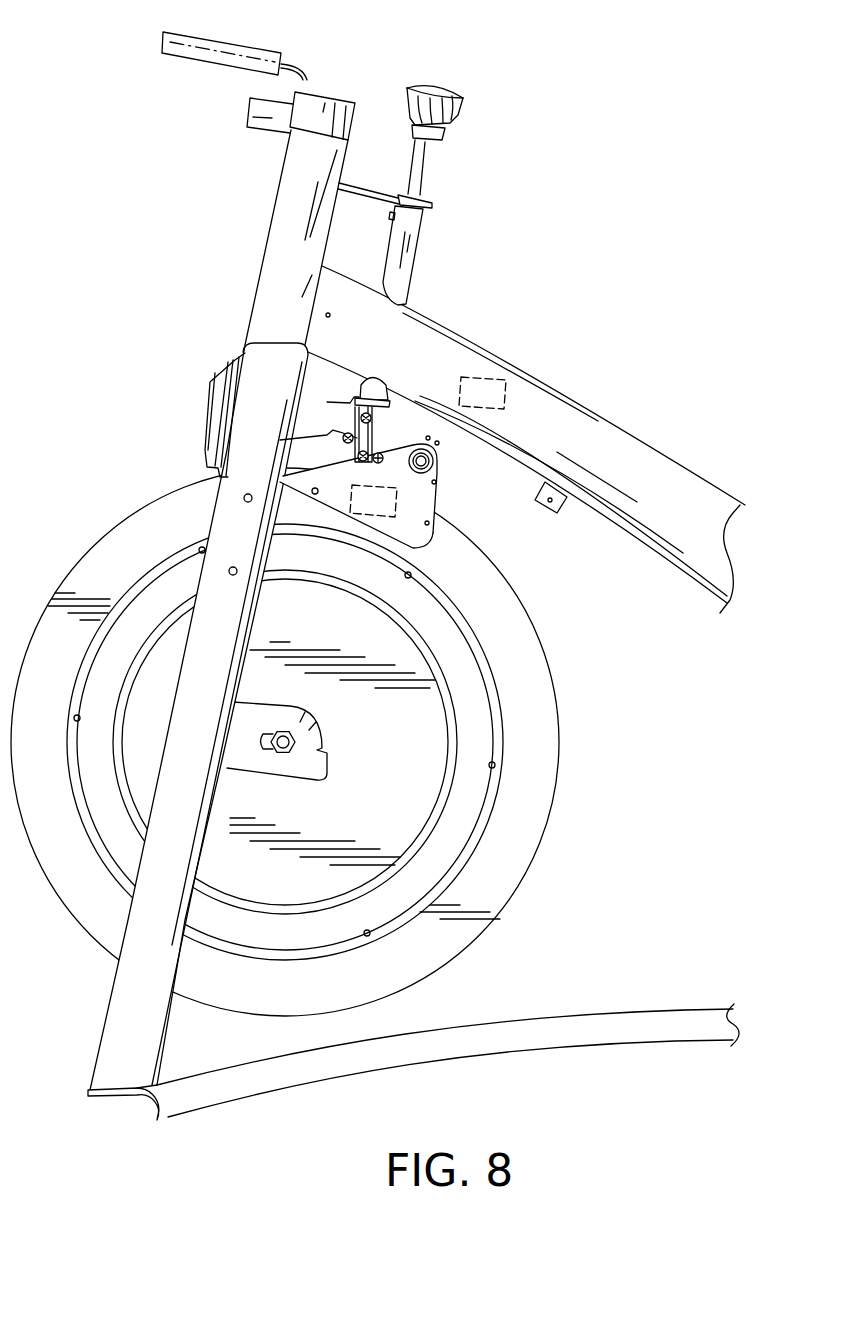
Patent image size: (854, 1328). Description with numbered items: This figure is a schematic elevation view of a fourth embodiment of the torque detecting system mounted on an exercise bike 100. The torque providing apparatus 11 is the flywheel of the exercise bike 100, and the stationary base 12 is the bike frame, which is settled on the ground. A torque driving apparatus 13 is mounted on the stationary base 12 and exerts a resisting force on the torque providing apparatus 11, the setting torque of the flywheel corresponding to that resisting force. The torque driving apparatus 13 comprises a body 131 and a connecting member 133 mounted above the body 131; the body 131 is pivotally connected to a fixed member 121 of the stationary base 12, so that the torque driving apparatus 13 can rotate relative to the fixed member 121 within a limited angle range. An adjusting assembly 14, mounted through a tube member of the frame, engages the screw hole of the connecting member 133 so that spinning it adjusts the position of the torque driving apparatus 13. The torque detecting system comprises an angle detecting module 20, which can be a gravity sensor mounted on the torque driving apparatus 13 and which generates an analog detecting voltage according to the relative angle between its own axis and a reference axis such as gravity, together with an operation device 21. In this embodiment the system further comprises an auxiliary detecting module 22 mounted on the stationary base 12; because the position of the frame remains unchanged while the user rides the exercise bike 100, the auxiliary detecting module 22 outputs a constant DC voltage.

The exercise bike 100 is at (604, 184).
The torque providing apparatus 11 is at (520, 648).
The stationary base 12 is at (568, 418).
The fixed member 121 is at (447, 435).
The torque driving apparatus 13 is at (445, 508).
The body 131 is at (413, 538).
The connecting member 133 is at (383, 423).
The adjusting assembly 14 is at (442, 166).
The angle detecting module 20 is at (350, 498).
The operation device 21 is at (257, 58).
The auxiliary detecting module 22 is at (490, 378).